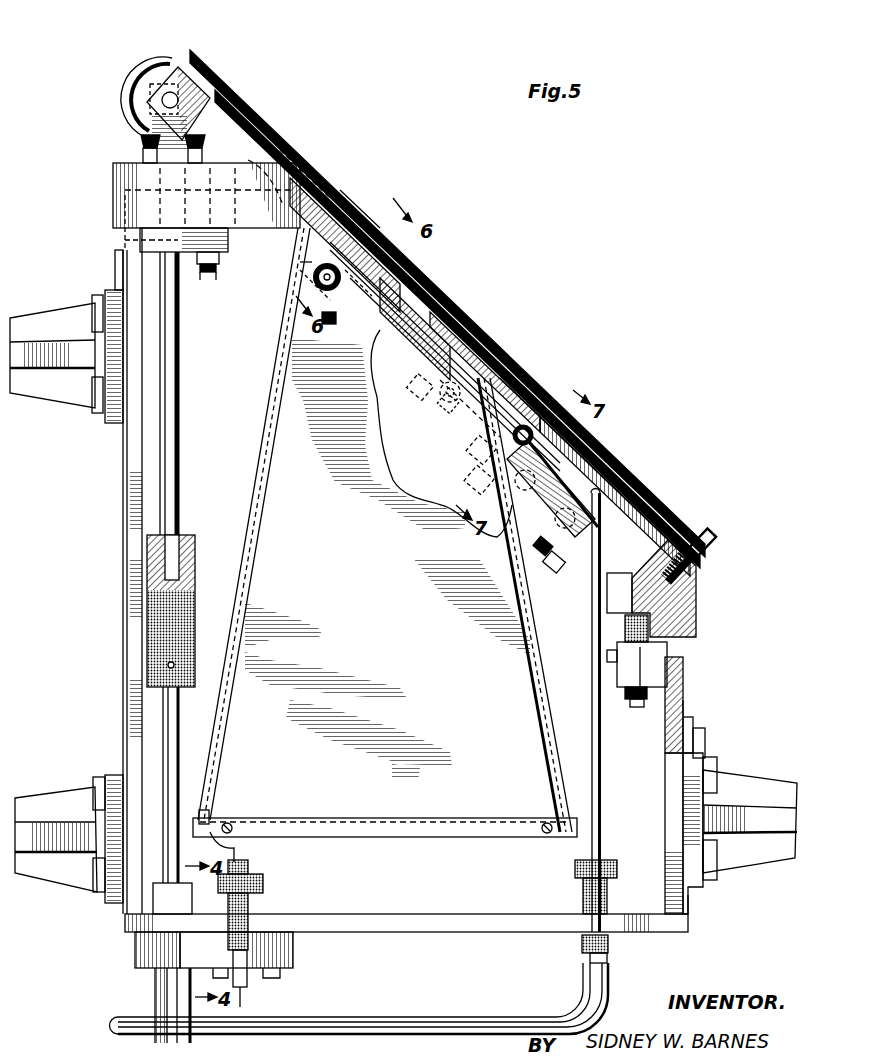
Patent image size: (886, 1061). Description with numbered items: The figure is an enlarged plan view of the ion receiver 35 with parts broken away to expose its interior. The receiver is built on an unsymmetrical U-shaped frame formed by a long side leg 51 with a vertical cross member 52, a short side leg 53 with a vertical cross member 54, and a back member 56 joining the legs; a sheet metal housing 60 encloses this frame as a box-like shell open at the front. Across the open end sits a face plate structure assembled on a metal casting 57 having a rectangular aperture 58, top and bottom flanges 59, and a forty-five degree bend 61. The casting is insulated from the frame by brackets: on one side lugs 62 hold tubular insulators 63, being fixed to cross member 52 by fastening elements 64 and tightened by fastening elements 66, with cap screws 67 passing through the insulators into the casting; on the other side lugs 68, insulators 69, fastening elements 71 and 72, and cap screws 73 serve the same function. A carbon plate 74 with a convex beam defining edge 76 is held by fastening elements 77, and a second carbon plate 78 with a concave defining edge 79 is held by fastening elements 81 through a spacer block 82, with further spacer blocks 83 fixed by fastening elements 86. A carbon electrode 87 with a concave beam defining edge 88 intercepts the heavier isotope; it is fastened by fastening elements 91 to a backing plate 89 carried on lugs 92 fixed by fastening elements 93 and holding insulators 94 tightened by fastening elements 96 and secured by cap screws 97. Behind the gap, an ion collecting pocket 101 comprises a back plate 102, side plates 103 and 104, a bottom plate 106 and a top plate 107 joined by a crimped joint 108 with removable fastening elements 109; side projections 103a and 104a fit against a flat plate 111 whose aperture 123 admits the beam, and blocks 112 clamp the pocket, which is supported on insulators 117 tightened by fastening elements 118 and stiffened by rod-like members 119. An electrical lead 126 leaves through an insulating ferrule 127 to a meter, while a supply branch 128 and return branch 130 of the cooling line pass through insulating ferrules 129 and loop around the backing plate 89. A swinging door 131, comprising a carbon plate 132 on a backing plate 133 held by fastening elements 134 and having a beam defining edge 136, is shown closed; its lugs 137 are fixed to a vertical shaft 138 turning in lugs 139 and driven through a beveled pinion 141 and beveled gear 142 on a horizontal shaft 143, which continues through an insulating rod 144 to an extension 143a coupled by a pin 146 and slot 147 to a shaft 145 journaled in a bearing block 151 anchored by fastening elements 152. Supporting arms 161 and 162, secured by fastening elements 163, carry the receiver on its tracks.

The ion receiver 35 is at (698, 701).
The long side leg 51 is at (125, 486).
The cross member 52 is at (116, 258).
The short side leg 53 is at (690, 924).
The cross member 54 is at (694, 721).
The back member 56 is at (403, 914).
The metal casting 57 is at (113, 174).
The aperture 58 is at (676, 516).
The flanges 59 is at (318, 170).
The sheet metal housing 60 is at (122, 639).
The 45° bend 61 is at (256, 170).
The lug 62 is at (232, 241).
The tubular insulator 63 is at (222, 260).
The fastening elements 64 is at (122, 239).
The fastening elements 66 is at (205, 283).
The cap screws 67 is at (229, 283).
The lug 68 is at (644, 708).
The tubular insulator 69 is at (660, 642).
The fastening elements 71 is at (668, 651).
The fastening elements 72 is at (607, 656).
The cap screws 73 is at (633, 700).
The carbon plate 74 is at (425, 285).
The beam defining edge 76 is at (440, 312).
The fastening elements 77 is at (300, 152).
The carbon plate 78 is at (638, 488).
The defining edge 79 is at (565, 392).
The fastening elements 81 is at (710, 536).
The spacer block 82 is at (698, 565).
The spacer blocks 83 is at (405, 228).
The fastening elements 86 is at (380, 218).
The carbon electrode 87 is at (500, 354).
The beam defining edge 88 is at (478, 340).
The backing plate 89 is at (600, 458).
The fastening elements 91 is at (588, 453).
The lug 92 is at (552, 557).
The fastening elements 93 is at (556, 530).
The tubular insulators 94 is at (480, 477).
The fastening elements 96 is at (478, 457).
The cap screws 97 is at (458, 482).
The ion collecting pocket 101 is at (398, 842).
The back plate 102 is at (452, 840).
The side plate 103 is at (264, 470).
The side projection 103a is at (330, 190).
The side plate 104 is at (540, 706).
The side projection 104a is at (482, 410).
The bottom plate 106 is at (400, 459).
The top plate 107 is at (407, 638).
The crimped joint 108 is at (206, 826).
The removable fastening elements 109 is at (232, 825).
The flat plate 111 is at (436, 410).
The blocks 112 is at (300, 263).
The tubular insulators 117 is at (316, 280).
The fastening elements 118 is at (334, 324).
The rod-like members 119 is at (300, 300).
The aperture 123 is at (515, 366).
The electrical lead 126 is at (238, 850).
The insulating ferrule 127 is at (266, 881).
The supply branch 128 is at (591, 634).
The insulating ferrule 129 is at (575, 870).
The return branch 130 is at (430, 1016).
The swinging type door 131 is at (228, 70).
The carbon plate 132 is at (480, 330).
The backing plate 133 is at (268, 123).
The fastening elements 134 is at (376, 200).
The beam defining edge 136 is at (540, 380).
The lugs 137 is at (178, 67).
The shaft 138 is at (164, 93).
The lugs 139 is at (146, 135).
The beveled pinion 141 is at (129, 97).
The beveled gear 142 is at (141, 146).
The horizontal shaft 143 is at (184, 336).
The extension 143a is at (165, 710).
The rod 144 is at (150, 602).
The shaft 145 is at (158, 977).
The pin 146 is at (160, 895).
The slot 147 is at (150, 920).
The bearing block 151 is at (293, 952).
The fastening elements 152 is at (258, 982).
The receiver supporting arms 161 is at (75, 396).
The receiver supporting arm 162 is at (750, 858).
The fastening elements 163 is at (92, 300).